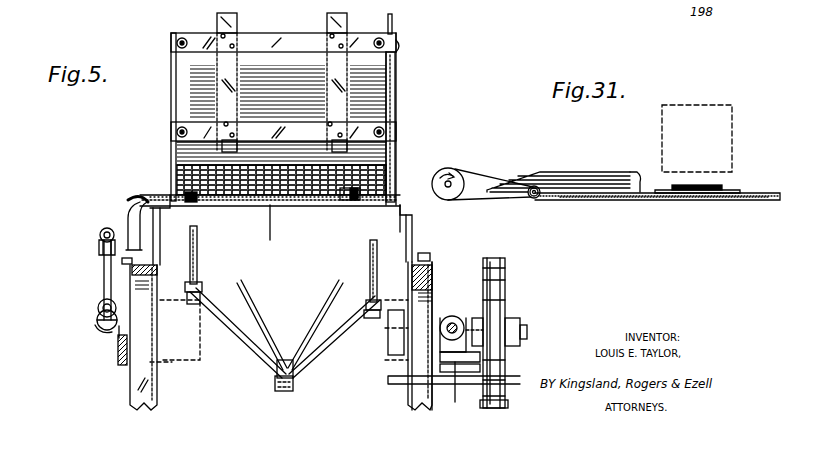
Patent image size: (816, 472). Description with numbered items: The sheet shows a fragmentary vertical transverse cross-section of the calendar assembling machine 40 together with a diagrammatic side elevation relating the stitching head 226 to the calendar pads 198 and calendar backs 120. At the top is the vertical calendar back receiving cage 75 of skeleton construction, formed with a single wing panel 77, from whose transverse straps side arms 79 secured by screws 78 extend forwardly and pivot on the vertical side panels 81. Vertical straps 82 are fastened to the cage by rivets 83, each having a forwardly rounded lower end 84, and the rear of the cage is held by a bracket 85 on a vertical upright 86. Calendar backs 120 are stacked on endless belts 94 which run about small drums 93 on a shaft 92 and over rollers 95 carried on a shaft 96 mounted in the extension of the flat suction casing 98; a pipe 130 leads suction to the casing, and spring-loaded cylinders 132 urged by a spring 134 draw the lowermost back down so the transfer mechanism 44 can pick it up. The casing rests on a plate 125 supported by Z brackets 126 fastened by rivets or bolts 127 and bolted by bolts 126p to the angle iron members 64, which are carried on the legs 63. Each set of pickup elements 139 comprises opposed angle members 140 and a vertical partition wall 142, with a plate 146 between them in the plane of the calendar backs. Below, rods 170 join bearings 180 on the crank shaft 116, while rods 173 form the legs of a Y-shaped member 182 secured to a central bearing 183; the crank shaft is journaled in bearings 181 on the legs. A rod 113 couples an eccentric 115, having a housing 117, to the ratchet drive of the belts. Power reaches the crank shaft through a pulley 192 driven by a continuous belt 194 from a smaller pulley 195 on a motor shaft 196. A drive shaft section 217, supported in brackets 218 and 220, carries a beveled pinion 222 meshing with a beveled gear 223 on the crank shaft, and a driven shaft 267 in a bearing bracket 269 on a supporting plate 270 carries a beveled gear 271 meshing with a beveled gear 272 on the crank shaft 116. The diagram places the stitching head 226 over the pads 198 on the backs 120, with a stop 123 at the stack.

In FIG. 5, the machine 40 is at (70, 187).
In FIG. 5, the calendar back pickup and transfer mechanism 44 is at (152, 188).
In FIG. 5, the legs 63 is at (133, 398).
In FIG. 5, the angle iron members 64 is at (130, 270).
In FIG. 5, the calendar back receiving cage 75 is at (404, 62).
In FIG. 5, the wing panel 77 is at (398, 80).
In FIG. 5, the screws 78 is at (184, 38).
In FIG. 5, the side arms 79 is at (396, 97).
In FIG. 5, the vertical side panels 81 is at (176, 151).
In FIG. 5, the vertical straps 82 is at (327, 60).
In FIG. 5, the rivets 83 is at (235, 45).
In FIG. 5, the rounded lower end 84 is at (236, 137).
In FIG. 5, the bracket 85 is at (400, 46).
In FIG. 5, the vertical upright 86 is at (393, 19).
In FIG. 31, the shaft 92 is at (456, 170).
In FIG. 31, the small drums 93 is at (468, 192).
In FIG. 31, the endless belts 94 is at (512, 196).
In FIG. 31, the roller 95 is at (536, 198).
In FIG. 31, the shaft 96 is at (538, 196).
In FIG. 5, the flat suction casing 98 is at (292, 210).
In FIG. 5, the rod 113 is at (396, 262).
In FIG. 5, the eccentric 115 is at (388, 348).
In FIG. 5, the crank shaft 116 is at (238, 340).
In FIG. 5, the housing 117 is at (388, 326).
In FIG. 5, the calendar backs 120 is at (195, 95).
In FIG. 31, the calendar backs 120 is at (575, 172).
In FIG. 31, the stop block 123 is at (638, 195).
In FIG. 5, the plate 125 is at (273, 227).
In FIG. 5, the Z brackets 126 is at (156, 230).
In FIG. 5, the bolts 126p is at (124, 261).
In FIG. 5, the rivets or bolts 127 is at (195, 232).
In FIG. 5, the pipe 130 is at (130, 201).
In FIG. 5, the cylinders 132 is at (248, 208).
In FIG. 5, the spring 134 is at (178, 165).
In FIG. 5, the sets of pickup elements 139 is at (392, 198).
In FIG. 5, the angle members 140 is at (196, 206).
In FIG. 5, the vertical partition wall 142 is at (398, 222).
In FIG. 31, the plate 146 is at (686, 200).
In FIG. 5, the rod 170 is at (200, 236).
In FIG. 5, the rod 173 is at (242, 280).
In FIG. 5, the bearing 180 is at (195, 304).
In FIG. 5, the bearings 181 is at (160, 362).
In FIG. 5, the Y-shaped member 182 is at (277, 368).
In FIG. 5, the bearing 183 is at (281, 392).
In FIG. 5, the pulley 192 is at (506, 267).
In FIG. 5, the continuous belt 194 is at (496, 288).
In FIG. 5, the smaller pulley 195 is at (508, 405).
In FIG. 5, the shaft 196 is at (390, 378).
In FIG. 31, the calendar pads 198 is at (700, 185).
In FIG. 5, the drive shaft section 217 is at (100, 232).
In FIG. 5, the bracket 218 is at (99, 245).
In FIG. 5, the bracket 220 is at (97, 318).
In FIG. 5, the beveled pinion 222 is at (96, 330).
In FIG. 5, the beveled gear 223 is at (120, 362).
In FIG. 31, the stitching head 226 is at (664, 152).
In FIG. 5, the driven shaft 267 is at (455, 326).
In FIG. 5, the bearing bracket 269 is at (482, 328).
In FIG. 5, the supporting plate 270 is at (482, 368).
In FIG. 5, the beveled gear 271 is at (444, 315).
In FIG. 5, the beveled gear 272 is at (448, 372).